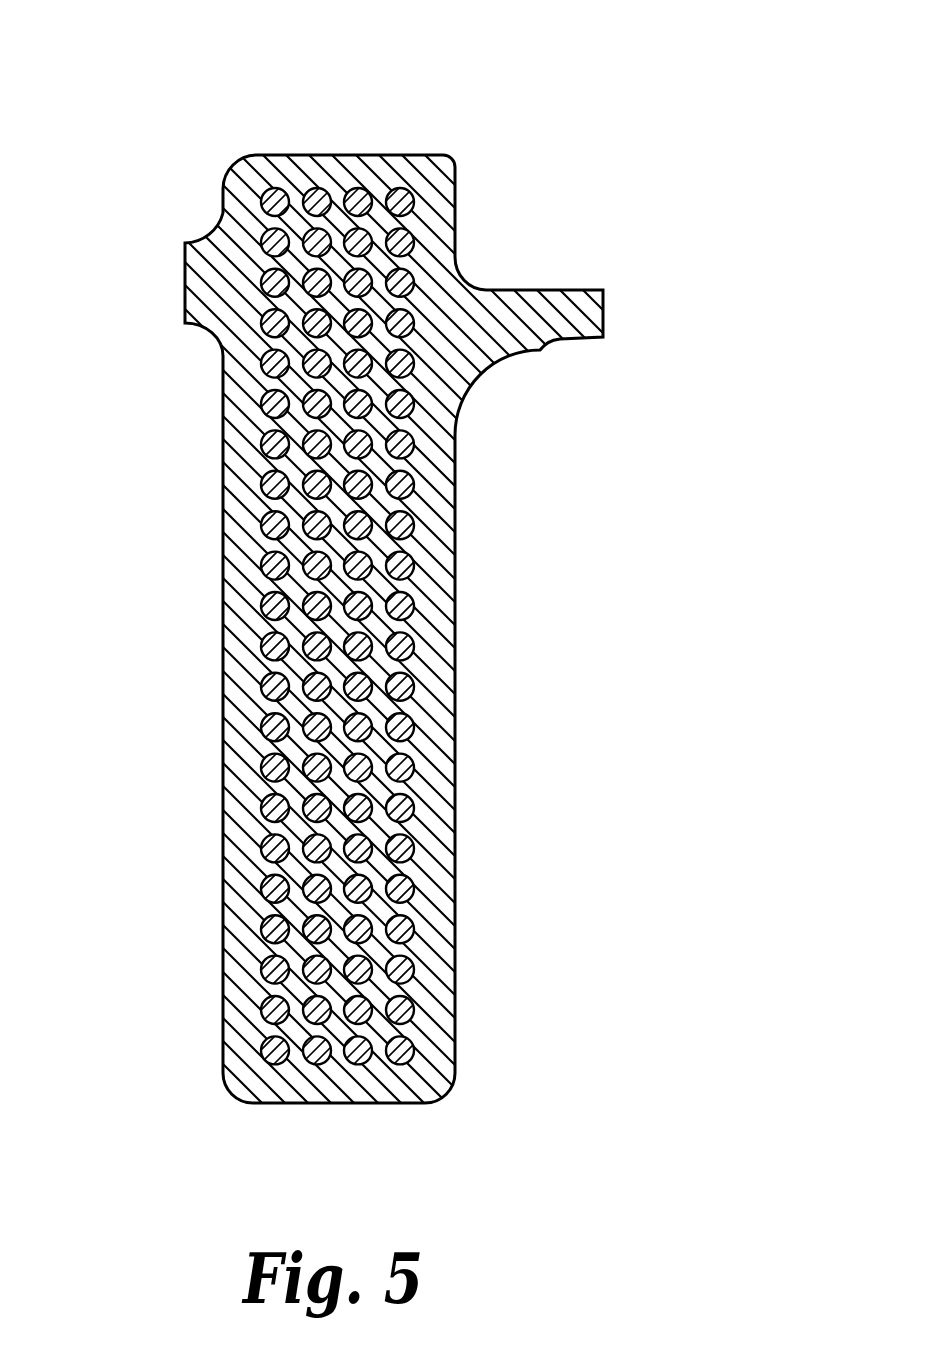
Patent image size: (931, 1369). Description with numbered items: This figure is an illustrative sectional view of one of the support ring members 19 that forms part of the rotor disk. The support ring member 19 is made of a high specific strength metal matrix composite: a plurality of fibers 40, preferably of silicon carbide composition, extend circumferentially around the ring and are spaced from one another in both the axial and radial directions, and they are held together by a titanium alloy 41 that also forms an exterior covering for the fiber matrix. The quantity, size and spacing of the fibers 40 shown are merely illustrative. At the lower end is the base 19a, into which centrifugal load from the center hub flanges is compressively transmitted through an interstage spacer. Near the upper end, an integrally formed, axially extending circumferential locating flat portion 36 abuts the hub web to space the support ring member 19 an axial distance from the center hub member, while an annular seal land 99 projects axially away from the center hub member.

The support ring member 19 is at (458, 119).
The base of the support ring member 19a is at (393, 1103).
The circumferential locating flat portion 36 is at (185, 305).
The fibers 40 is at (281, 190).
The titanium alloy 41 is at (252, 420).
The annular seal land 99 is at (603, 295).